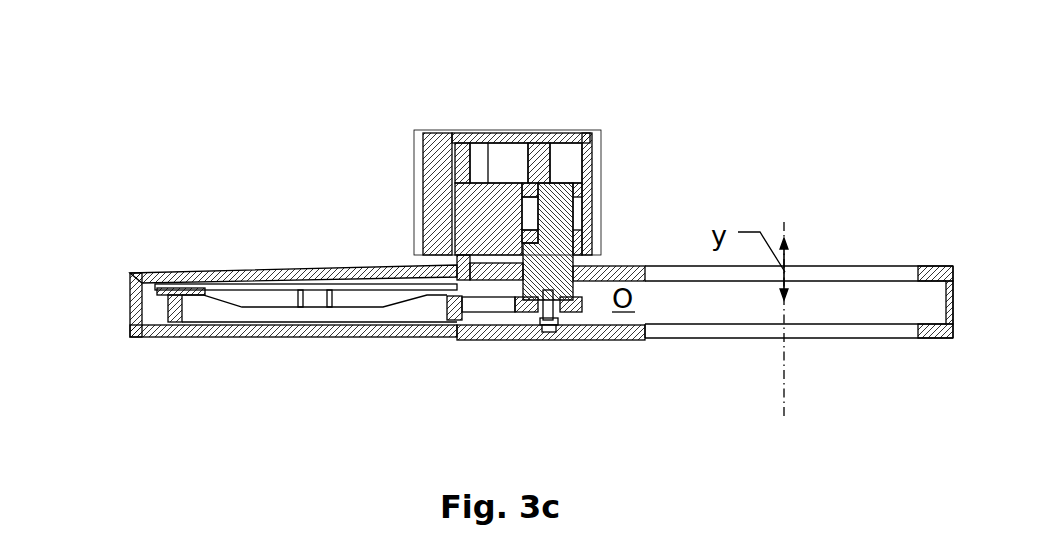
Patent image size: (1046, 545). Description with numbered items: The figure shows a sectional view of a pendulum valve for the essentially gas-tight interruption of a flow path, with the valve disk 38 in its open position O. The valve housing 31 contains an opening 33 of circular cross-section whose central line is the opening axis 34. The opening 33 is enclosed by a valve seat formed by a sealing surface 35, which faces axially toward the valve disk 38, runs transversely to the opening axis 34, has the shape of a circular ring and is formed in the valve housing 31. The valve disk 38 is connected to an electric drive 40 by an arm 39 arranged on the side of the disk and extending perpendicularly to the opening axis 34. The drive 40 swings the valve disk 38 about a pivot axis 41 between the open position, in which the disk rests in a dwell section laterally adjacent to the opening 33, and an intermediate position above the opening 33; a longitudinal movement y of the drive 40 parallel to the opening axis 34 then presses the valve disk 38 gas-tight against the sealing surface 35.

The valve housing 31 is at (296, 270).
The opening 33 is at (763, 330).
The opening axis 34 is at (744, 327).
The sealing surface 35 is at (551, 371).
The valve disk 38 is at (150, 308).
The arm 39 is at (462, 357).
The electric drive 40 is at (527, 185).
The pivot axis 41 is at (604, 223).